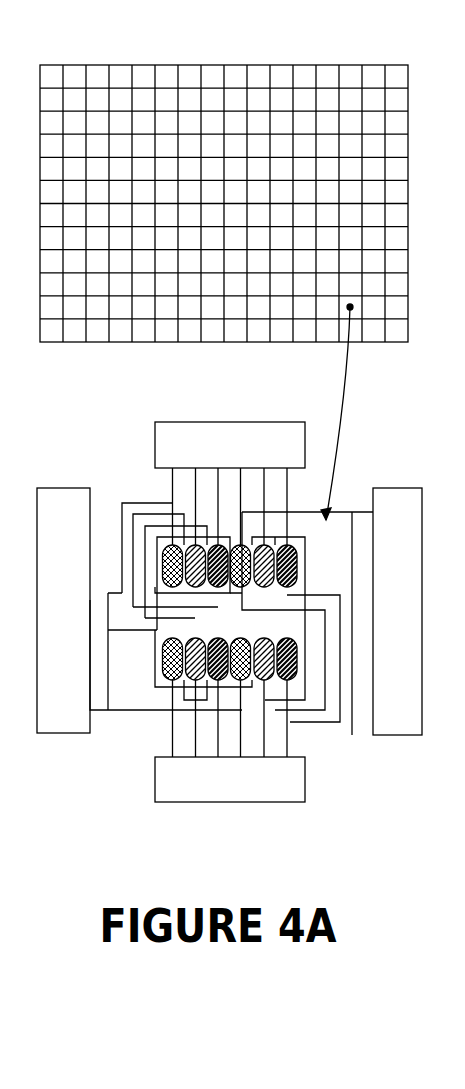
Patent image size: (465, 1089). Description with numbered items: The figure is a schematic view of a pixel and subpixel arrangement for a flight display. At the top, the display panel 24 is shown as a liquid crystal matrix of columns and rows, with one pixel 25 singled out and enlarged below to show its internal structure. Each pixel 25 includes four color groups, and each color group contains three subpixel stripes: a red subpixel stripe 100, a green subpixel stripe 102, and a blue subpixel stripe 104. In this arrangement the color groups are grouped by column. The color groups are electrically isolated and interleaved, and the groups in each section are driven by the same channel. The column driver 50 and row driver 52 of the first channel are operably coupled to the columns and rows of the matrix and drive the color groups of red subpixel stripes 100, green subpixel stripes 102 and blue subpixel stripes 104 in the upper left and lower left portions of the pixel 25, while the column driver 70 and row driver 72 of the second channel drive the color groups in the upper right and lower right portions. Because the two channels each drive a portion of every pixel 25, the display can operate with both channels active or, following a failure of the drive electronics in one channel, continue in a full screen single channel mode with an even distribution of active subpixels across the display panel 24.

The display panel 24 is at (90, 64).
The pixel 25 is at (200, 125).
The column driver 50 is at (222, 422).
The row driver 52 is at (68, 488).
The column driver 70 is at (305, 782).
The row driver 72 is at (390, 735).
The red subpixel stripe 100 is at (168, 547).
The green subpixel stripe 102 is at (190, 547).
The blue subpixel stripe 104 is at (213, 547).